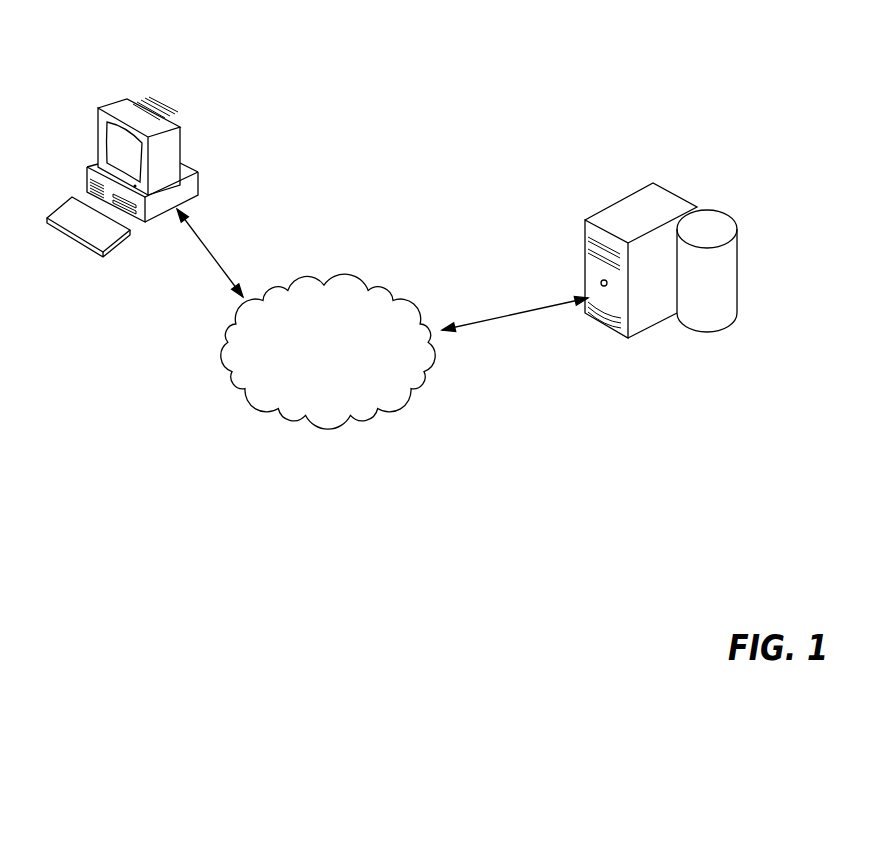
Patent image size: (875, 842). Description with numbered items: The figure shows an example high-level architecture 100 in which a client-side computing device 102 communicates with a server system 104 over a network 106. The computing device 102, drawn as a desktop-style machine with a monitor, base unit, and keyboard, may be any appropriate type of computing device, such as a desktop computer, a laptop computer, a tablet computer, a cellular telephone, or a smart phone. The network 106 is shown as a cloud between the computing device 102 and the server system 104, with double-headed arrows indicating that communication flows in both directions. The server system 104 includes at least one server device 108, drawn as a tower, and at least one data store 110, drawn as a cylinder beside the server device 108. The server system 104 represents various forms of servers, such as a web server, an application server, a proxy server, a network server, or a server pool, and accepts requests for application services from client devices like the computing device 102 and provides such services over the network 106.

The high-level architecture 100 is at (440, 128).
The computing device 102 is at (97, 108).
The server system 104 is at (745, 173).
The network 106 is at (233, 393).
The server device 108 is at (585, 278).
The data store 110 is at (737, 262).